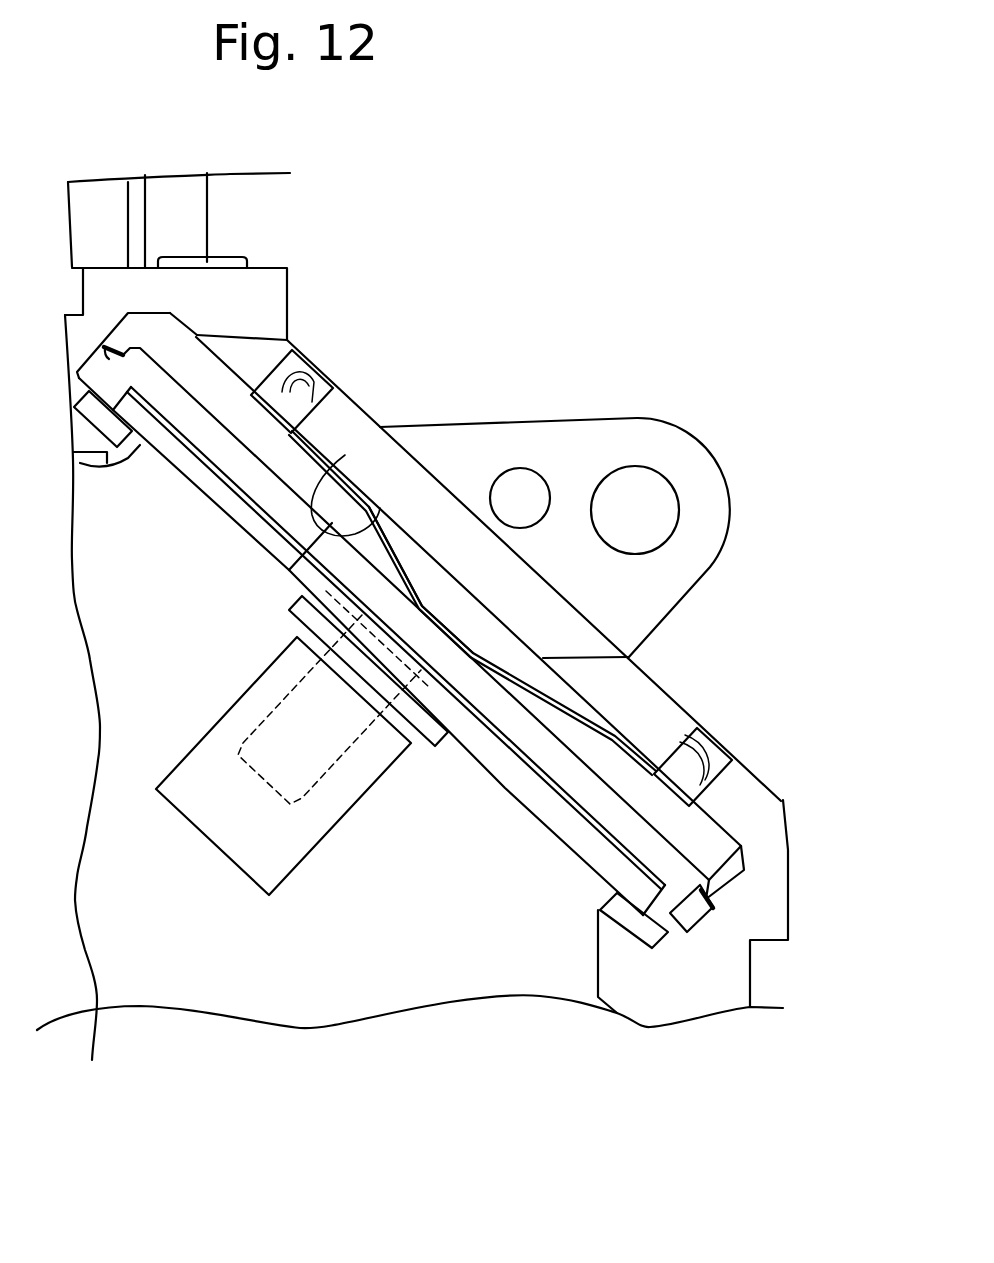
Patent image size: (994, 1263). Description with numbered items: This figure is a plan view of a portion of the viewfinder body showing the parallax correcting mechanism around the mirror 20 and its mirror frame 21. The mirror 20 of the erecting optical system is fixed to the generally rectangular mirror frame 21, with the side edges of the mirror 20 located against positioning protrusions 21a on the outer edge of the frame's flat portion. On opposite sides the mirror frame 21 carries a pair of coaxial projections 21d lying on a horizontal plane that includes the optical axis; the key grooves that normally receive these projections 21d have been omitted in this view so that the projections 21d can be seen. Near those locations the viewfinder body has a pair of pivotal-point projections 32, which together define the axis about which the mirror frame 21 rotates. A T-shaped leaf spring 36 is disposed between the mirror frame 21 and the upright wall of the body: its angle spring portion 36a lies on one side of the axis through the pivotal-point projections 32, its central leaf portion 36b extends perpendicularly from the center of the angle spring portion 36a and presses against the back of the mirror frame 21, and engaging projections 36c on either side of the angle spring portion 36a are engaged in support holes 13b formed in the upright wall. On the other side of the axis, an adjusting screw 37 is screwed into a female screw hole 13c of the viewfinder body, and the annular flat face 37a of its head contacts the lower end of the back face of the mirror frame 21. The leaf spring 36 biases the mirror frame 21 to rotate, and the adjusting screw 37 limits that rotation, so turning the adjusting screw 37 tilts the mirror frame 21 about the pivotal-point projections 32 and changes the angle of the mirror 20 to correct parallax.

The mirror 20 is at (623, 877).
The mirror frame 21 is at (575, 780).
The positioning protrusion 21a is at (118, 345).
The projection 21d is at (107, 377).
The pivotal-point projection 32 is at (77, 372).
The leaf spring 36 is at (590, 710).
The angle spring portion 36a is at (517, 760).
The central leaf portion 36b is at (435, 655).
The engaging projection 36c is at (298, 395).
The adjusting screw 37 is at (425, 592).
The annular flat face 37a is at (345, 455).
The support hole 13b is at (322, 385).
The female screw hole 13c is at (340, 753).